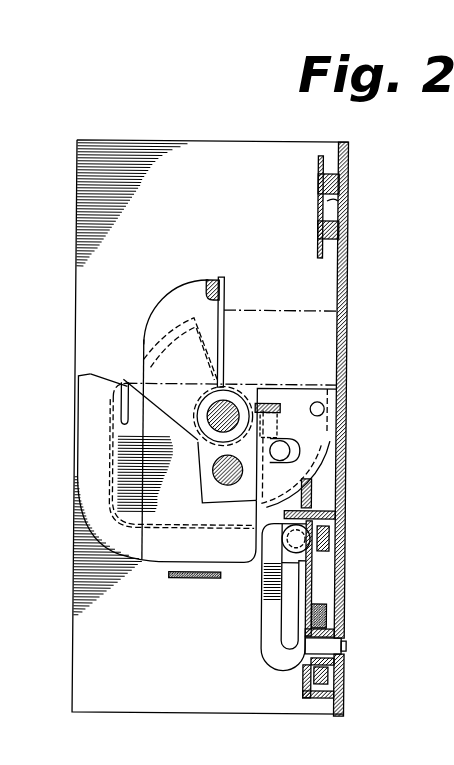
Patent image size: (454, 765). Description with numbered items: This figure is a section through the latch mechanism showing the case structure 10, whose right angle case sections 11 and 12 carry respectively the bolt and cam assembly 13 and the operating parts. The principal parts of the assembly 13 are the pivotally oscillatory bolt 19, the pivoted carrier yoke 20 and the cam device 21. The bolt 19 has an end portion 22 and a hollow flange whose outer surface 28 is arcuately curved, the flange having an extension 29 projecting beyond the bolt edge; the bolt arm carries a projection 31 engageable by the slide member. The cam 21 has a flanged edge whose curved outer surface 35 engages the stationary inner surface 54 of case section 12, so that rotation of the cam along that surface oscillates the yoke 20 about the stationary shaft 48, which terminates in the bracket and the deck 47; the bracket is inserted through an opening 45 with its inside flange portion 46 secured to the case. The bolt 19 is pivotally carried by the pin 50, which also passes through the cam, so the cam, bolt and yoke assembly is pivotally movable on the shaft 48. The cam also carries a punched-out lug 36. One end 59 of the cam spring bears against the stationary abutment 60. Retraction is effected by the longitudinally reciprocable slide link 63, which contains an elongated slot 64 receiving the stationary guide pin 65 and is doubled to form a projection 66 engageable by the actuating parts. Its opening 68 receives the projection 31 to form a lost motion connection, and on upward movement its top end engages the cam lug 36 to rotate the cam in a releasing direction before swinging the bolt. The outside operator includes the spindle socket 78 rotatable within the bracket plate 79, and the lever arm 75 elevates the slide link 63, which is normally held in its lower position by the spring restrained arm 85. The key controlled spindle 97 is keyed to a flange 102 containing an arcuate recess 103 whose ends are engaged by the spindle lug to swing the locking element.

The case structure 10 is at (72, 205).
The case section 11 is at (212, 150).
The case section 12 is at (348, 287).
The bolt and cam assembly 13 is at (235, 373).
The bolt 19 is at (128, 366).
The carrier yoke 20 is at (193, 475).
The cam device 21 is at (284, 375).
The end portion 22 is at (165, 398).
The outer surface 28 is at (218, 385).
The extension 29 is at (121, 404).
The projection 31 is at (283, 450).
The outer surface 35 is at (338, 410).
The lug 36 is at (280, 412).
The opening 45 is at (158, 525).
The inside flange portion 46 is at (88, 432).
The deck 47 is at (172, 292).
The shaft 48 is at (227, 482).
The pin 50 is at (228, 403).
The inner surface 54 is at (333, 330).
The spring end 59 is at (228, 298).
The stationary abutment 60 is at (208, 283).
The slide link 63 is at (320, 575).
The elongated slot 64 is at (290, 592).
The guide pin 65 is at (285, 548).
The projection 66 is at (333, 515).
The opening 68 is at (323, 458).
The arm 75 is at (330, 538).
The spindle socket 78 is at (348, 201).
The bracket plate 79 is at (316, 167).
The arm 85 is at (312, 488).
The key controlled spindle 97 is at (348, 645).
The flange 102 is at (330, 670).
The arcuate recess 103 is at (328, 613).